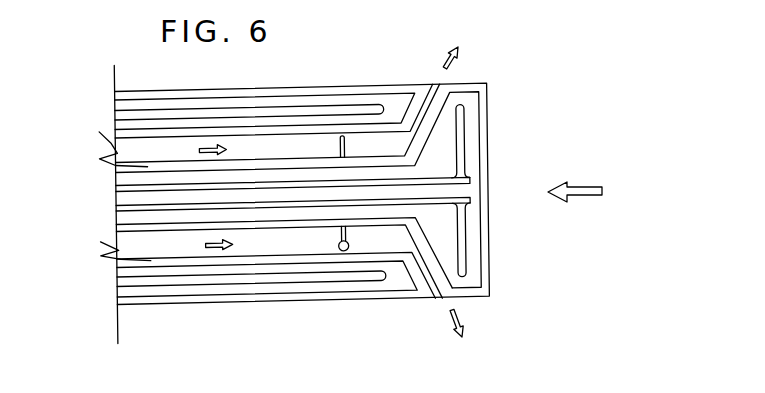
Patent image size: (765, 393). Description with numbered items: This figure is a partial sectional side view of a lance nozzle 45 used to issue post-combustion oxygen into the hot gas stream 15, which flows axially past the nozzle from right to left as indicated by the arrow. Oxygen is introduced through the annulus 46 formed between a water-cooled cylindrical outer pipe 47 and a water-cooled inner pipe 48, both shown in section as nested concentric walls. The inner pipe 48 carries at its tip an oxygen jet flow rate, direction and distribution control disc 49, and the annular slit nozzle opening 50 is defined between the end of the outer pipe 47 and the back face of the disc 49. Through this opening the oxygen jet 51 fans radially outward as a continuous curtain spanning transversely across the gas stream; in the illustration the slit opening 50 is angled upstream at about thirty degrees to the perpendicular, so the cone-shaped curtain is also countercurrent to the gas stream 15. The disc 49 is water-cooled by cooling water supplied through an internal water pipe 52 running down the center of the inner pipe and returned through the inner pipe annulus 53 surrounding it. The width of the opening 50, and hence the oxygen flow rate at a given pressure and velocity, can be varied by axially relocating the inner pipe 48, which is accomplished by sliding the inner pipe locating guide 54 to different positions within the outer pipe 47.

The hot gas stream 15 is at (585, 187).
The lance nozzle 45 is at (500, 123).
The annulus 46 is at (112, 140).
The cylindrical outer pipe 47 is at (120, 254).
The inner pipe 48 is at (122, 156).
The oxygen jet flow rate, direction and distribution control disc 49 is at (457, 300).
The annular slit nozzle opening 50 is at (435, 298).
The oxygen jet 51 is at (465, 60).
The internal water pipe 52 is at (128, 200).
The inner pipe annulus 53 is at (130, 216).
The inner pipe locating guide 54 is at (338, 142).